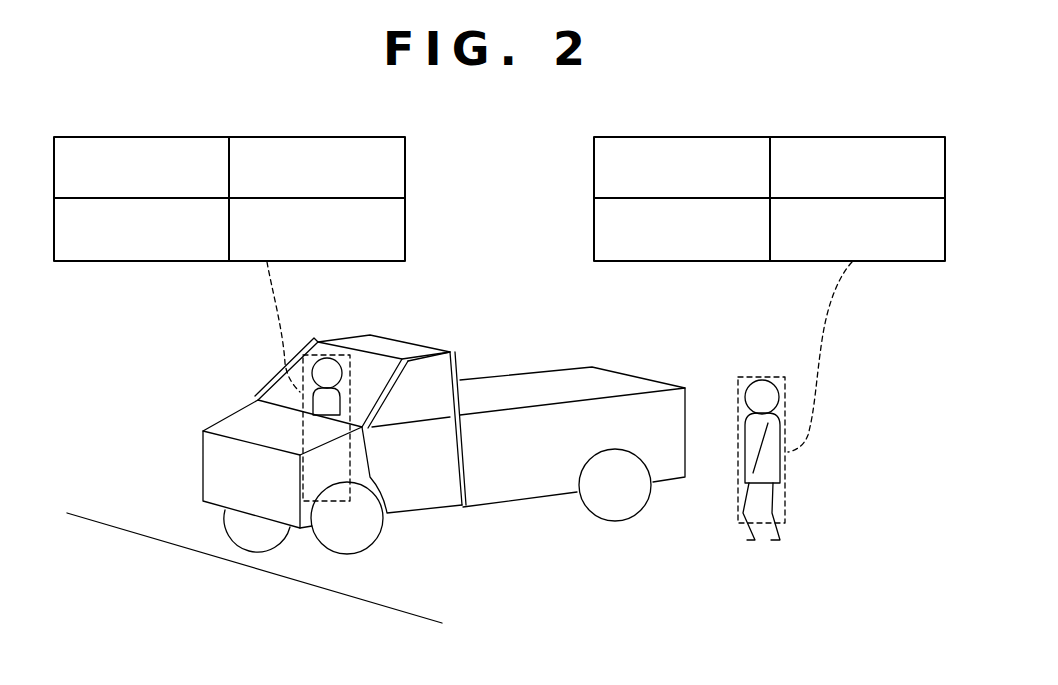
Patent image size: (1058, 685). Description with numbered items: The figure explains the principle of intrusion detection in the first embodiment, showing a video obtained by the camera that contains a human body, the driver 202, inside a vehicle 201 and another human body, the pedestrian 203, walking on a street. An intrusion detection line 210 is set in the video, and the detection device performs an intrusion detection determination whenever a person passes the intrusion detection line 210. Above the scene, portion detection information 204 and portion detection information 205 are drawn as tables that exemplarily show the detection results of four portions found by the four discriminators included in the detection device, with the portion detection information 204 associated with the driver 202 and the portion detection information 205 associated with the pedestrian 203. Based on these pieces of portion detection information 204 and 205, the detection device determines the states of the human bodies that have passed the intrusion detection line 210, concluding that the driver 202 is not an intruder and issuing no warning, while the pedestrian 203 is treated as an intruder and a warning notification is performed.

The vehicle 201 is at (407, 350).
The driver 202 is at (322, 340).
The pedestrian 203 is at (762, 382).
The portion detection information 204 is at (252, 137).
The portion detection information 205 is at (812, 137).
The intrusion detection line 210 is at (103, 522).